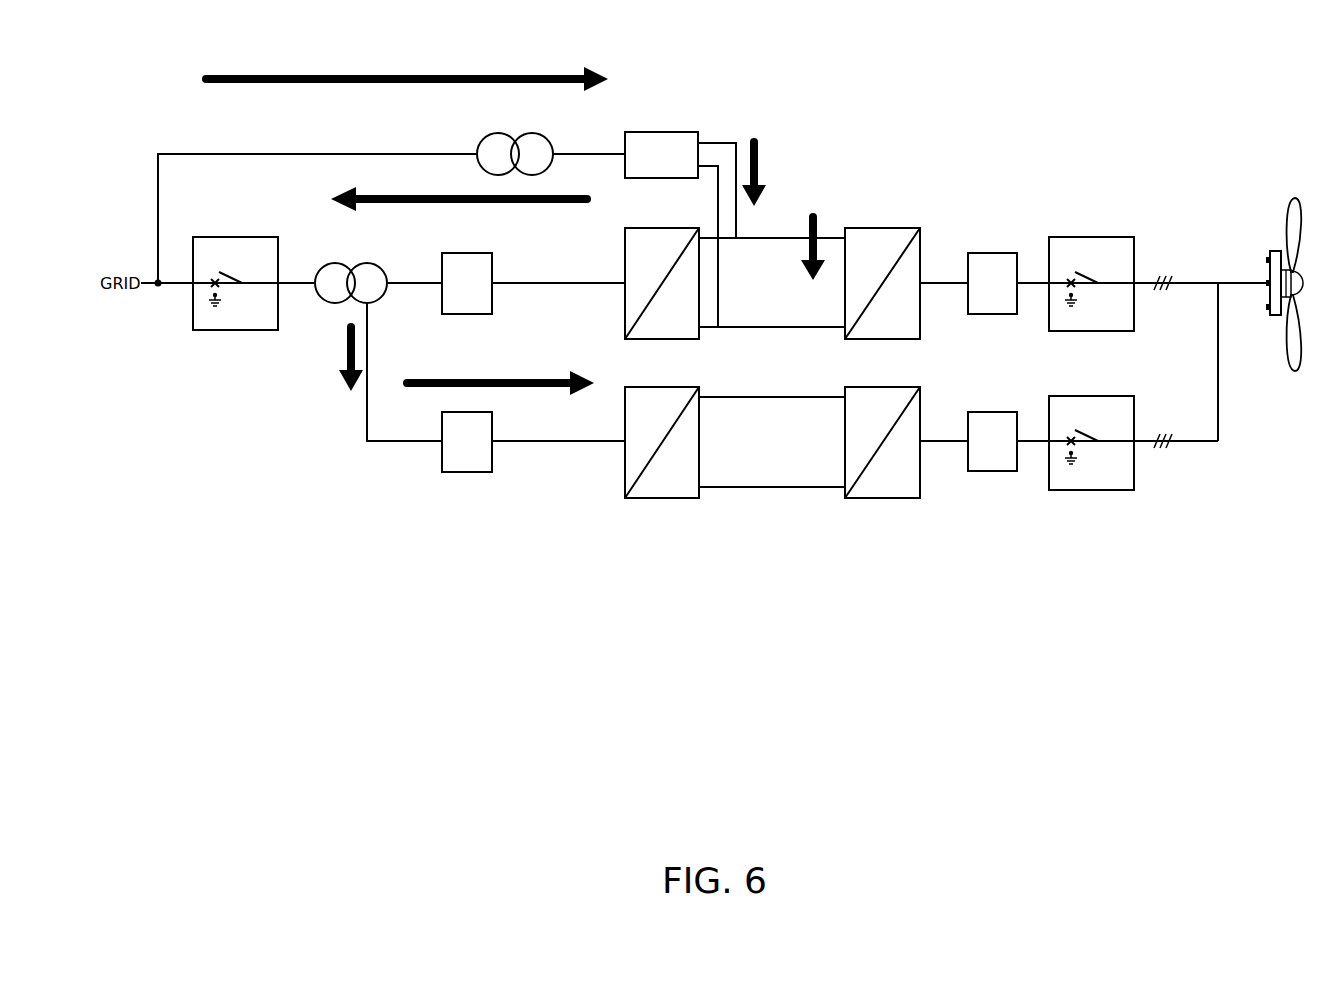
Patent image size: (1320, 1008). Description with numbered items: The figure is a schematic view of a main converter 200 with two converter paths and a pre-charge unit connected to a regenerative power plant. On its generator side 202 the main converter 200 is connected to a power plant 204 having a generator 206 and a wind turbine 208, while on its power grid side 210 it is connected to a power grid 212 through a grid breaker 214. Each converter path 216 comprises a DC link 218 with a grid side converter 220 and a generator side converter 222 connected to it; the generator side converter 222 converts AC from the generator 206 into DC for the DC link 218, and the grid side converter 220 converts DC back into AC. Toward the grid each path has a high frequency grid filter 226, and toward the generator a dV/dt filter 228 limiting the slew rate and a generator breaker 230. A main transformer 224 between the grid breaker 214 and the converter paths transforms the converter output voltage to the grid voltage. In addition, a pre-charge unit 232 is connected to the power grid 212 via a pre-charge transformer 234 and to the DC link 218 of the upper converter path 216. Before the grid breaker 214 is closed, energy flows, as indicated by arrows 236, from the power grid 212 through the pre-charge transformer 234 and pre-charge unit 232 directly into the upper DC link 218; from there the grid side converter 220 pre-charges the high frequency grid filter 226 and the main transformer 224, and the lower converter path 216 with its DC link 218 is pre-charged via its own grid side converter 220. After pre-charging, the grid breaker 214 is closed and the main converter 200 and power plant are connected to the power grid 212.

The main converter 200 is at (719, 108).
The generator side 202 is at (1217, 268).
The power plant 204 is at (1274, 279).
The generator 206 is at (1275, 315).
The wind turbine 208 is at (1296, 365).
The power grid side 210 is at (168, 236).
The power grid 212 is at (148, 262).
The grid breaker 214 is at (274, 237).
The converter path 216 is at (781, 163).
The DC link 218 is at (796, 238).
The grid side converter 220 is at (666, 228).
The generator side converter 222 is at (886, 228).
The main transformer 224 is at (327, 262).
The high frequency grid filter 226 is at (469, 253).
The dV/dt filter 228 is at (993, 253).
The generator breaker 230 is at (1092, 237).
The pre-charge unit 232 is at (663, 131).
The pre-charge transformer 234 is at (488, 133).
The arrows 236 is at (399, 75).